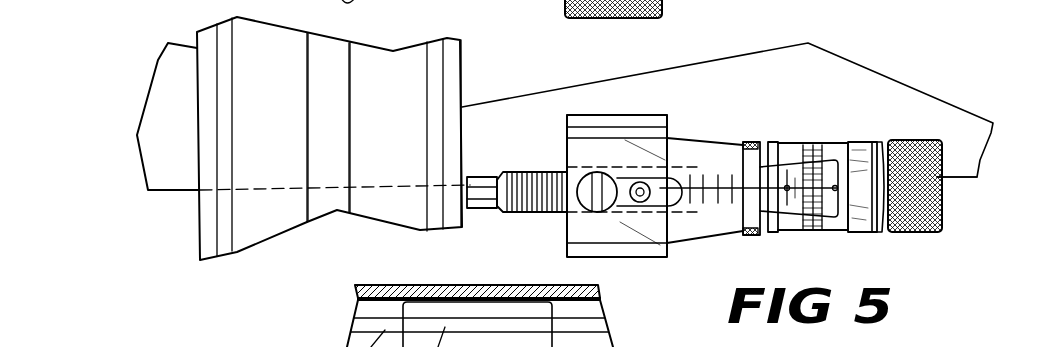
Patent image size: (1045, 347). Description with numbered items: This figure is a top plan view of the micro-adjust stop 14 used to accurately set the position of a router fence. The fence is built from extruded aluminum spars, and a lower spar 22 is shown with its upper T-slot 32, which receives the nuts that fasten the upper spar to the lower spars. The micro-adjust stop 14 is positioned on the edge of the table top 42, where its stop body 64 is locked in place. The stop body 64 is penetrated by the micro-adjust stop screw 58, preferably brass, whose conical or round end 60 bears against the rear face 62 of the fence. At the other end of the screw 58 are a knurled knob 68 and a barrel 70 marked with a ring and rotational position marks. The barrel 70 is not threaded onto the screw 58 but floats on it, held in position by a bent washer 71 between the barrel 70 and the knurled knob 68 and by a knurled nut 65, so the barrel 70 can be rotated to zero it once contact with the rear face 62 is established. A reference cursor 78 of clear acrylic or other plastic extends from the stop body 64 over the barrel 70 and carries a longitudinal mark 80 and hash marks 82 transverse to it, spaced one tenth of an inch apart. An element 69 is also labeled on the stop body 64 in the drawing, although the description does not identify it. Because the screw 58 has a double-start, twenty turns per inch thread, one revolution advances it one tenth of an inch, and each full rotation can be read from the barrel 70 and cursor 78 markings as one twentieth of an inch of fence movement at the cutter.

The micro-adjust stop 14 is at (660, 113).
The lower spar 22 is at (394, 50).
The upper T-slot 32 is at (330, 200).
The table top 42 is at (860, 85).
The micro-adjust stop screw 58 is at (517, 215).
The end 60 is at (458, 203).
The rear face 62 is at (468, 143).
The stop body 64 is at (620, 116).
The knurled nut 65 is at (757, 233).
The knurled knob 68 is at (923, 233).
The screw 69 is at (636, 201).
The barrel 70 is at (863, 233).
The bent washer 71 is at (935, 137).
The reference cursor 78 is at (690, 147).
The longitudinal mark 80 is at (712, 173).
The hash marks 82 is at (697, 199).